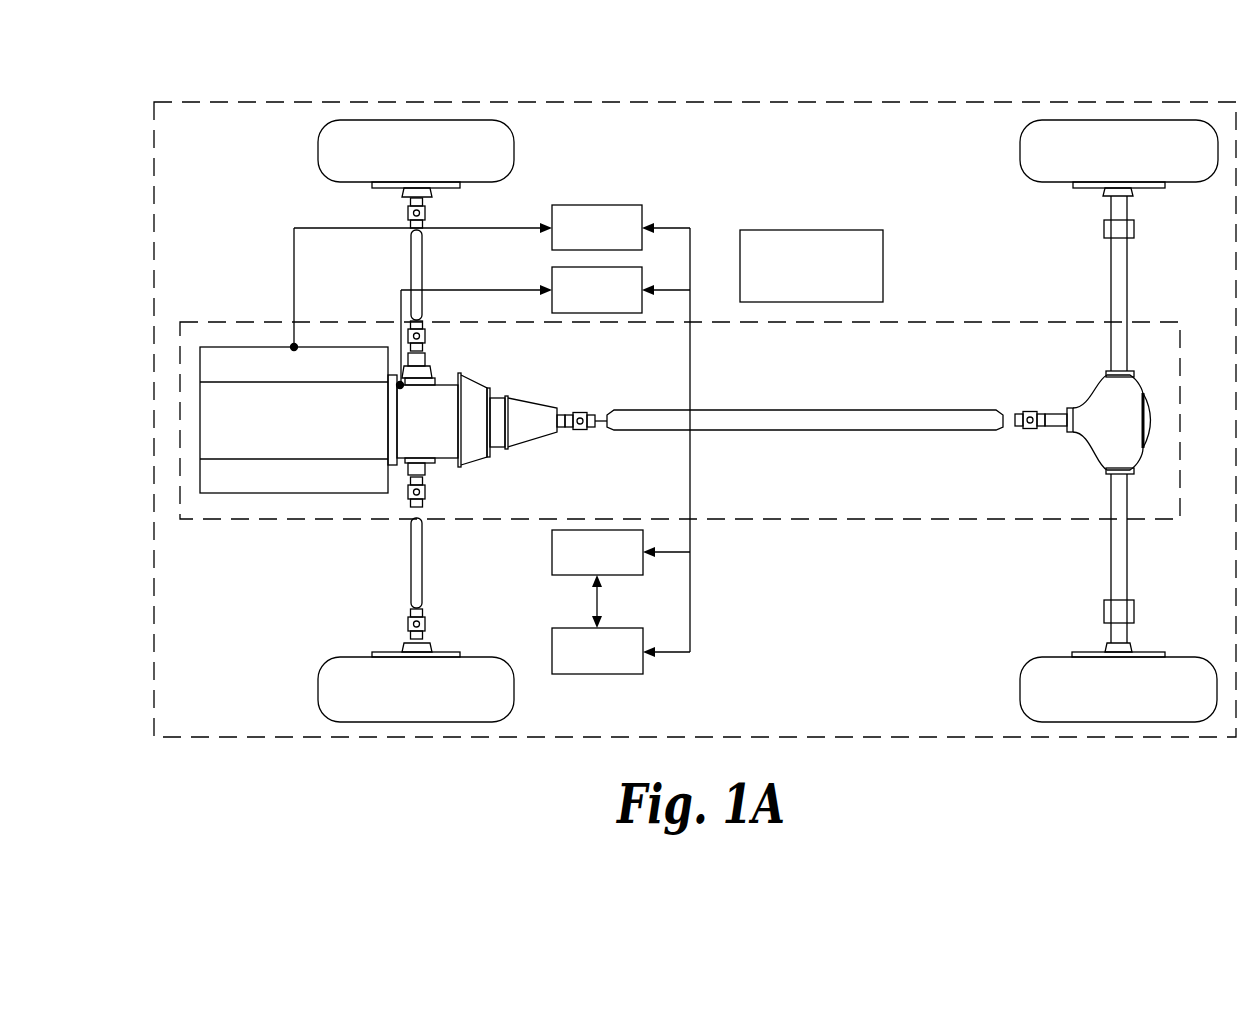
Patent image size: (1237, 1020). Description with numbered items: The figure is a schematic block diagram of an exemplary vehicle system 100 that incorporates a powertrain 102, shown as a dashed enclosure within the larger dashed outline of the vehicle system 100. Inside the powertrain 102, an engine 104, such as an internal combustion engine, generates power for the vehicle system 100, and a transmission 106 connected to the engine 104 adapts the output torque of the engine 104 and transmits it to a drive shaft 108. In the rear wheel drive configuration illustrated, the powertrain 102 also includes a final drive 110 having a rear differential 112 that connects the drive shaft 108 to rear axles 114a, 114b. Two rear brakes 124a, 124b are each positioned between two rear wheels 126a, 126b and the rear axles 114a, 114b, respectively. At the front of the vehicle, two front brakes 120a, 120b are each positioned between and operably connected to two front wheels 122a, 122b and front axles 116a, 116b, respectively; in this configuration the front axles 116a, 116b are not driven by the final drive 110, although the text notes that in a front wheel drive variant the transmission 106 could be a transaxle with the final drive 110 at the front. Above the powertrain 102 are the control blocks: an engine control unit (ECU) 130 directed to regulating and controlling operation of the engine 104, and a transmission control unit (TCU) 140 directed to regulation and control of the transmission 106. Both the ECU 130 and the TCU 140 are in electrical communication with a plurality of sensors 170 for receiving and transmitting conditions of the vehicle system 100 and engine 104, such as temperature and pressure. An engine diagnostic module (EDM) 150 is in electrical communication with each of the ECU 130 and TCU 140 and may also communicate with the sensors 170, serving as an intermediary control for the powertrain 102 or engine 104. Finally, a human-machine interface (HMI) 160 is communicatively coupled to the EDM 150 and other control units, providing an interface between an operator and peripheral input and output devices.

The vehicle system 100 is at (763, 98).
The powertrain 102 is at (372, 528).
The engine 104 is at (313, 435).
The transmission 106 is at (443, 435).
The drive shaft 108 is at (650, 410).
The final drive 110 is at (1181, 406).
The rear differential 112 is at (1149, 442).
The rear axle 114a is at (1111, 300).
The rear axle 114b is at (1111, 576).
The front axle 116a is at (423, 308).
The front axle 116b is at (423, 570).
The front brake 120a is at (390, 189).
The front brake 120b is at (385, 652).
The front wheel 122a is at (318, 150).
The front wheel 122b is at (318, 683).
The rear brake 124a is at (1092, 188).
The rear brake 124b is at (1090, 652).
The rear wheel 126a is at (1020, 150).
The rear wheel 126b is at (1020, 683).
The engine control unit (ECU) 130 is at (584, 205).
The transmission control unit (TCU) 140 is at (550, 279).
The engine diagnostic module (EDM) 150 is at (567, 576).
The human-machine interface (HMI) 160 is at (576, 675).
The sensors 170 is at (740, 268).